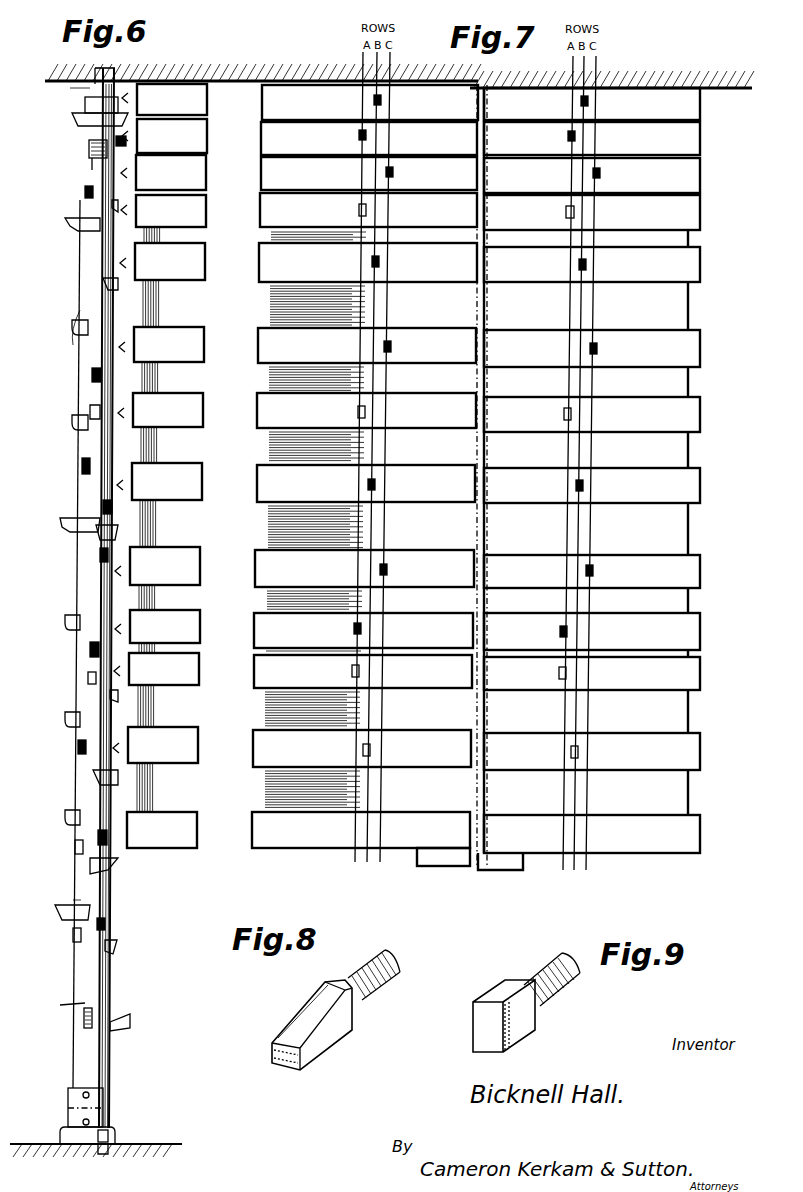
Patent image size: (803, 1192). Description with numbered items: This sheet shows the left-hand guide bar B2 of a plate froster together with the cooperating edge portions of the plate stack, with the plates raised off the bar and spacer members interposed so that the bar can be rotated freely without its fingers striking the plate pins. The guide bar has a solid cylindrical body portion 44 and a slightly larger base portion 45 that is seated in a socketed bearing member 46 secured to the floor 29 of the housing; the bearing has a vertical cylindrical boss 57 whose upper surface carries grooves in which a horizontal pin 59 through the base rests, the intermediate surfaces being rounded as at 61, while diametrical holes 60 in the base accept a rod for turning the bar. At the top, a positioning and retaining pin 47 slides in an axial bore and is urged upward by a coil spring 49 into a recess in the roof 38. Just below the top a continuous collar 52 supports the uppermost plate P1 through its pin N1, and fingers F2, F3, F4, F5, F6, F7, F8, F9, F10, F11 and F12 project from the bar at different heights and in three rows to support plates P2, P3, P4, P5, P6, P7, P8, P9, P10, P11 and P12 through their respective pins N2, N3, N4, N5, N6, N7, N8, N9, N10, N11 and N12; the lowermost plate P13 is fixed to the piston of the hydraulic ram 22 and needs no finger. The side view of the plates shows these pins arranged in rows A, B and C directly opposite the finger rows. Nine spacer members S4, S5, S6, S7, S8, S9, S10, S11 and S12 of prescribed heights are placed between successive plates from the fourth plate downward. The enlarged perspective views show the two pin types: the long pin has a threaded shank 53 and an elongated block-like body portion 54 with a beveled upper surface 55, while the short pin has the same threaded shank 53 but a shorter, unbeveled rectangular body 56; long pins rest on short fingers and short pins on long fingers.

In FIG. 6, the hydraulic ram 22 is at (442, 866).
In FIG. 6, the floor 29 is at (135, 1148).
In FIG. 6, the roof 38 is at (142, 76).
In FIG. 6, the body portion 44 is at (105, 1060).
In FIG. 6, the base portion 45 is at (100, 1092).
In FIG. 6, the socketed bearing member 46 is at (108, 70).
In FIG. 6, the positioning and retaining pin 47 is at (100, 90).
In FIG. 6, the coil spring 49 is at (95, 165).
In FIG. 6, the collar 52 is at (78, 122).
In FIG. 8, the threaded shank 53 is at (392, 965).
In FIG. 9, the threaded shank 53 is at (578, 972).
In FIG. 8, the body portion 54 is at (332, 1020).
In FIG. 8, the beveled upper surface 55 is at (300, 1018).
In FIG. 9, the body 56 is at (520, 1030).
In FIG. 6, the vertical cylindrical boss 57 is at (62, 1136).
In FIG. 6, the horizontal pin 59 is at (106, 1130).
In FIG. 6, the holes 60 is at (80, 1094).
In FIG. 6, the rounded portions 61 is at (80, 1120).
In FIG. 6, the guide bar B2 is at (72, 896).
In FIG. 6, the finger F2 is at (88, 146).
In FIG. 6, the finger F3 is at (85, 192).
In FIG. 6, the finger F4 is at (66, 219).
In FIG. 6, the finger F5 is at (92, 375).
In FIG. 6, the finger F6 is at (82, 465).
In FIG. 6, the finger F7 is at (100, 552).
In FIG. 6, the finger F8 is at (90, 649).
In FIG. 6, the finger F9 is at (78, 744).
In FIG. 6, the finger F10 is at (98, 836).
In FIG. 6, the finger F11 is at (97, 924).
In FIG. 6, the finger F12 is at (60, 1005).
In FIG. 6, the plate pin N1 is at (400, 102).
In FIG. 7, the plate pin N1 is at (588, 102).
In FIG. 6, the plate pin N2 is at (400, 138).
In FIG. 7, the plate pin N2 is at (575, 137).
In FIG. 6, the plate pin N3 is at (400, 174).
In FIG. 7, the plate pin N3 is at (600, 174).
In FIG. 6, the plate pin N4 is at (400, 211).
In FIG. 7, the plate pin N4 is at (574, 212).
In FIG. 6, the plate pin N5 is at (400, 264).
In FIG. 7, the plate pin N5 is at (586, 265).
In FIG. 6, the plate pin N6 is at (398, 349).
In FIG. 7, the plate pin N6 is at (597, 349).
In FIG. 6, the plate pin N7 is at (398, 414).
In FIG. 7, the plate pin N7 is at (571, 414).
In FIG. 6, the plate pin N8 is at (396, 487).
In FIG. 7, the plate pin N8 is at (583, 486).
In FIG. 6, the plate pin N9 is at (396, 572).
In FIG. 7, the plate pin N9 is at (593, 571).
In FIG. 6, the plate pin N10 is at (394, 632).
In FIG. 7, the plate pin N10 is at (567, 632).
In FIG. 6, the plate pin N11 is at (392, 674).
In FIG. 7, the plate pin N11 is at (566, 673).
In FIG. 6, the plate pin N12 is at (392, 753).
In FIG. 7, the plate pin N12 is at (578, 752).
In FIG. 6, the plate P1 is at (260, 103).
In FIG. 6, the plate P2 is at (259, 138).
In FIG. 6, the plate P3 is at (259, 173).
In FIG. 6, the plate P4 is at (258, 210).
In FIG. 6, the plate P5 is at (257, 263).
In FIG. 6, the plate P6 is at (256, 348).
In FIG. 6, the plate P7 is at (255, 413).
In FIG. 6, the plate P8 is at (255, 485).
In FIG. 6, the plate P9 is at (253, 573).
In FIG. 6, the plate P10 is at (256, 633).
In FIG. 6, the plate P11 is at (256, 675).
In FIG. 6, the plate P12 is at (255, 754).
In FIG. 6, the plate P13 is at (250, 832).
In FIG. 6, the spacer member S4 is at (272, 236).
In FIG. 6, the spacer member S5 is at (285, 308).
In FIG. 6, the spacer member S6 is at (283, 381).
In FIG. 6, the spacer member S7 is at (280, 451).
In FIG. 6, the spacer member S8 is at (285, 532).
In FIG. 6, the spacer member S9 is at (280, 601).
In FIG. 6, the spacer member S10 is at (267, 651).
In FIG. 6, the spacer member S11 is at (280, 710).
In FIG. 6, the spacer member S12 is at (280, 790).